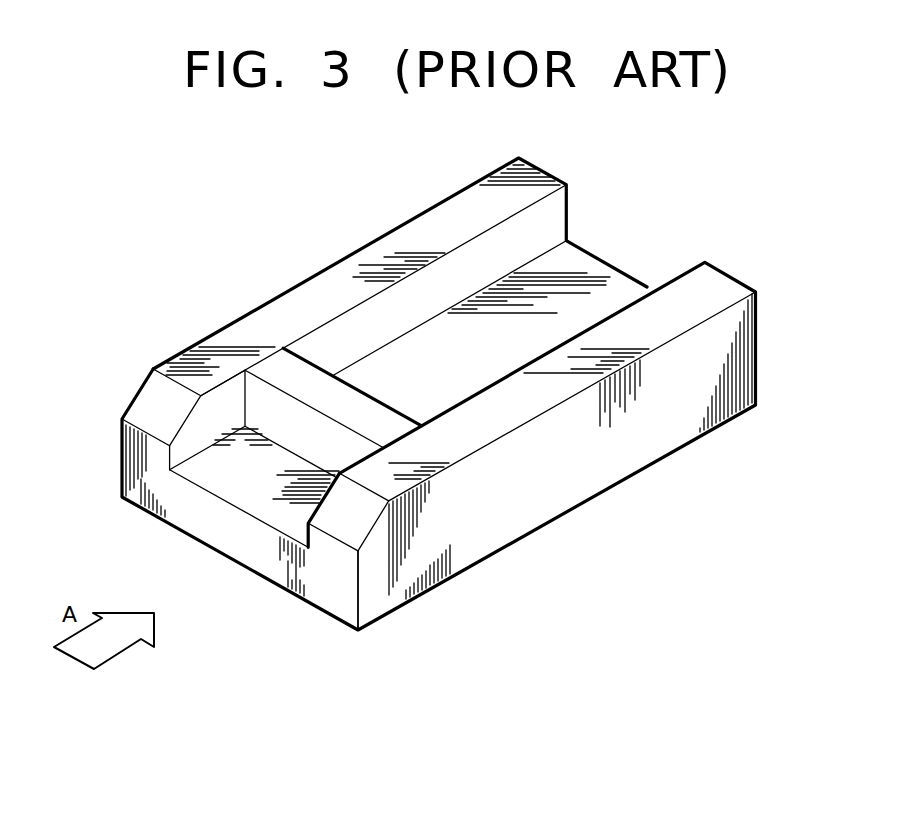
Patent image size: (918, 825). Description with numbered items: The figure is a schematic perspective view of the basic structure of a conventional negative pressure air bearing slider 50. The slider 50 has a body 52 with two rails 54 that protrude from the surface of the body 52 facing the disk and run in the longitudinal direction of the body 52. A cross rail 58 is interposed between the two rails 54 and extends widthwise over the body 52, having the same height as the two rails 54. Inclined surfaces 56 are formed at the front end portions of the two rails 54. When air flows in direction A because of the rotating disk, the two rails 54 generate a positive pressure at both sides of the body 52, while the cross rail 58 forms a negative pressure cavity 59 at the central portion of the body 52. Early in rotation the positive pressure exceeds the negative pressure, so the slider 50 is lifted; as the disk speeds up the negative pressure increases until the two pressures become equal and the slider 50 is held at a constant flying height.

The NP air bearing slider 50 is at (413, 413).
The body 52 is at (236, 545).
The rails 54 is at (384, 247).
The inclined surfaces 56 is at (142, 402).
The cross rail 58 is at (316, 392).
The negative pressure cavity 59 is at (441, 388).